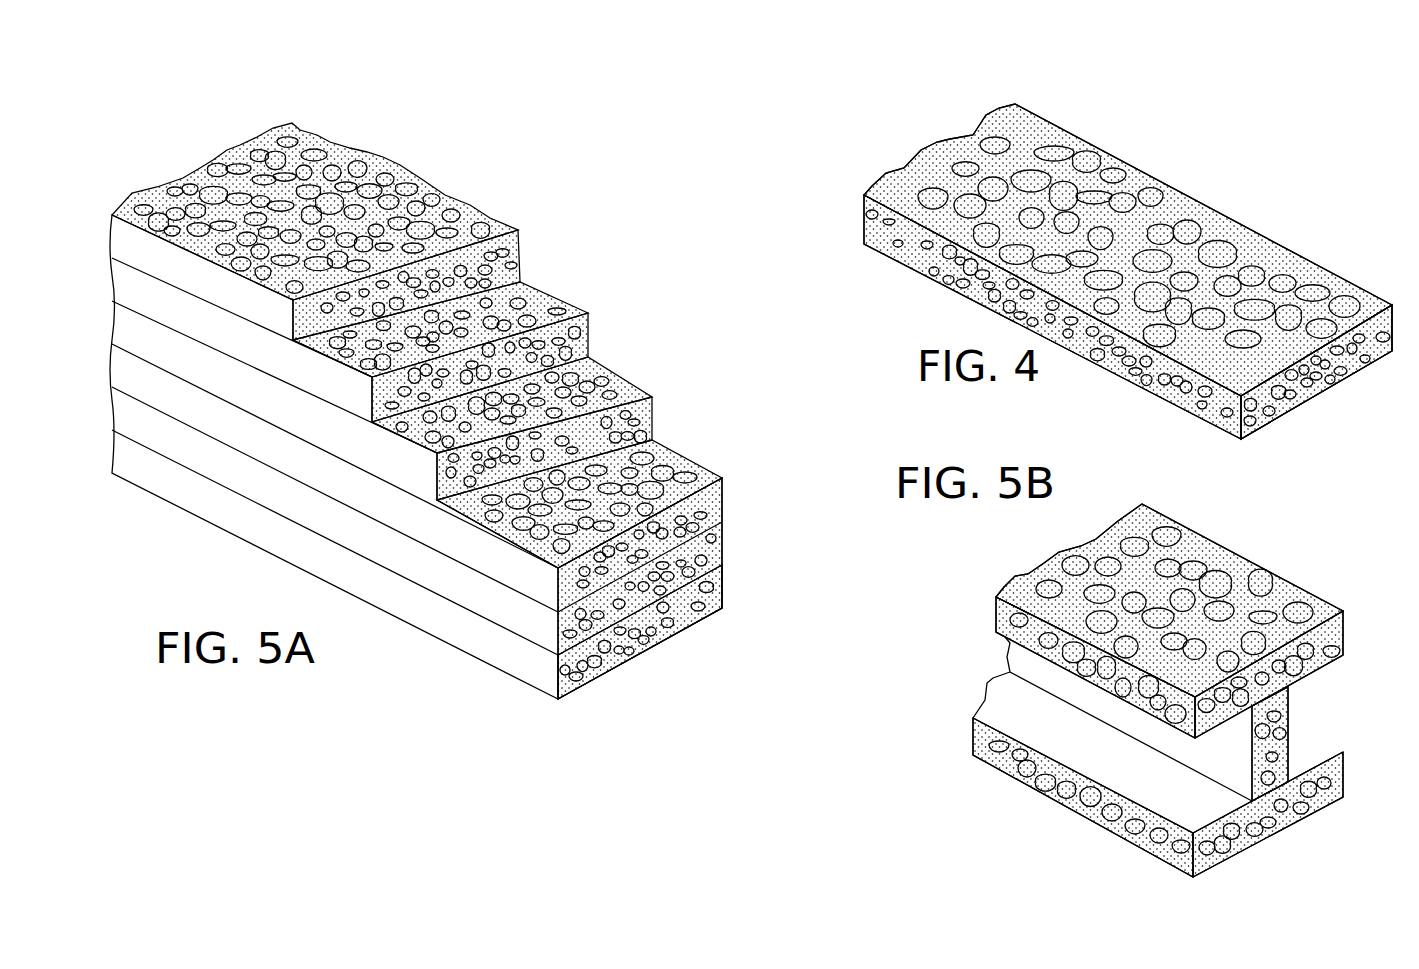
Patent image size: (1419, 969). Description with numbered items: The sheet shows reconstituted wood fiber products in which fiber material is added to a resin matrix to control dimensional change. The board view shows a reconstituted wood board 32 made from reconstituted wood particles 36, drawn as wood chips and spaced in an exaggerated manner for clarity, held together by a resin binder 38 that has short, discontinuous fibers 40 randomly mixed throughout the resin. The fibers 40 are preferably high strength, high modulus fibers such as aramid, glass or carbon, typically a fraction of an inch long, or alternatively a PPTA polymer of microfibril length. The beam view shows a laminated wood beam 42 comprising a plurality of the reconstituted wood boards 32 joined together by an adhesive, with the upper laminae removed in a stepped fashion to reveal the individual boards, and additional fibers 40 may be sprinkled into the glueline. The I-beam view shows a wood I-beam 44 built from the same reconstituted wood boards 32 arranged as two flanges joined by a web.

In FIG. 5A, the reconstituted wood board 32 is at (666, 446).
In FIG. 4, the reconstituted wood board 32 is at (1220, 170).
In FIG. 5B, the reconstituted wood board 32 is at (1286, 563).
In FIG. 5A, the reconstituted wood particles 36 is at (630, 660).
In FIG. 4, the reconstituted wood particles 36 is at (1354, 298).
In FIG. 5B, the reconstituted wood particles 36 is at (991, 606).
In FIG. 5A, the resin binder 38 is at (663, 642).
In FIG. 4, the resin binder 38 is at (1383, 302).
In FIG. 5A, the fibers 40 is at (360, 173).
In FIG. 4, the fibers 40 is at (1076, 135).
In FIG. 5B, the fibers 40 is at (1240, 554).
In FIG. 5A, the laminated wood beam 42 is at (738, 535).
In FIG. 5B, the wood I-beam 44 is at (972, 653).